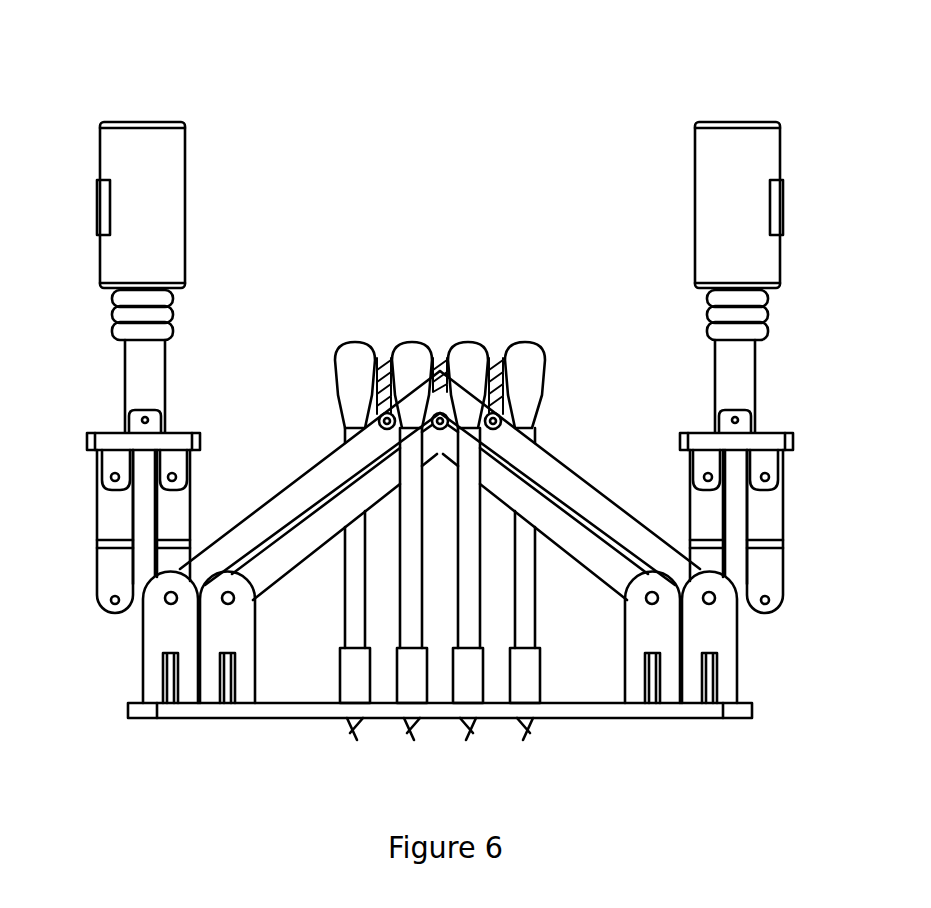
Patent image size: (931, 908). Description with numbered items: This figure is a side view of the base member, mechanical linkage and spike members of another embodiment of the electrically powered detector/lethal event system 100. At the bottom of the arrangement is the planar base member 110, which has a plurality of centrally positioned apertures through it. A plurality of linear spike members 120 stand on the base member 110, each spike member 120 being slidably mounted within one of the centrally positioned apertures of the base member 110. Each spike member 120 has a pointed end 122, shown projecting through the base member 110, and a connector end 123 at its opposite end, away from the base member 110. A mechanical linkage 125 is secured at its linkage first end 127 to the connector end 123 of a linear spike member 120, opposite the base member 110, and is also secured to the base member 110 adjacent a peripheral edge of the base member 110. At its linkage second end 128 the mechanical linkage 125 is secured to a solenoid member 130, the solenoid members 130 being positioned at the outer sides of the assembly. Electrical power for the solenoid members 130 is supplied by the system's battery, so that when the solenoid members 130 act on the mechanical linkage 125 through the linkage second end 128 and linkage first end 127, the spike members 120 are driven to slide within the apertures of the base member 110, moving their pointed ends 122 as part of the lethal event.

The detector/lethal event system 100 is at (390, 185).
The base member 110 is at (275, 710).
The linear spike member 120 is at (413, 572).
The pointed end 122 is at (523, 727).
The connector end 123 is at (352, 385).
The mechanical linkage 125 is at (245, 478).
The linkage first end 127 is at (388, 367).
The linkage second end 128 is at (168, 445).
The solenoid member 130 is at (143, 158).